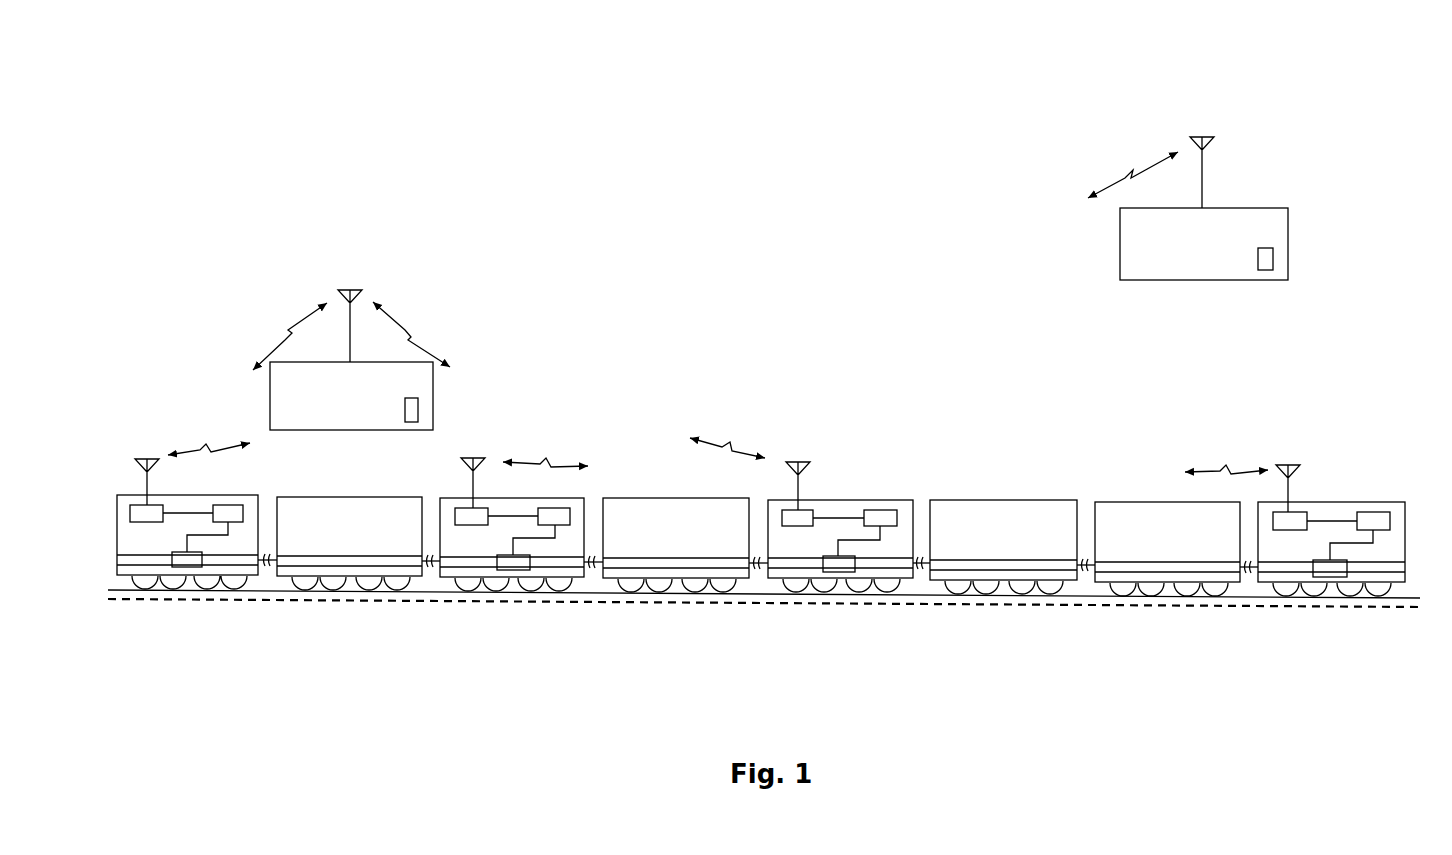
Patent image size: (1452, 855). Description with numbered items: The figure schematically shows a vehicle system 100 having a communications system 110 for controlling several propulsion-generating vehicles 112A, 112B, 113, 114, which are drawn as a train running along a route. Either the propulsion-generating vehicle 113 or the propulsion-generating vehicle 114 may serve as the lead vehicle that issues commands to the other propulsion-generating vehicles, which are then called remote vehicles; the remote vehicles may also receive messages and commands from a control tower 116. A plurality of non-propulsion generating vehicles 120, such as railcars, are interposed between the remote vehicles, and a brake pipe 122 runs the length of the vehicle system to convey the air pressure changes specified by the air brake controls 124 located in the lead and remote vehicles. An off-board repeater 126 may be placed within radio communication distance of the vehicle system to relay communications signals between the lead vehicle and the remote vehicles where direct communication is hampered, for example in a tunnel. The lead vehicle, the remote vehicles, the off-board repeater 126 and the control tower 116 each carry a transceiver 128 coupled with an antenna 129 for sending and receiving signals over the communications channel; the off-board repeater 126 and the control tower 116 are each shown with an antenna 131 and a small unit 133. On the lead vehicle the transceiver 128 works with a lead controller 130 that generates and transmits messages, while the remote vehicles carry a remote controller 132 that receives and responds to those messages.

The vehicle system 100 is at (553, 365).
The communications system 110 is at (752, 420).
The propulsion-generating vehicle 112A is at (858, 500).
The propulsion-generating vehicle 112B is at (458, 498).
The propulsion-generating vehicle 113 is at (1406, 512).
The propulsion-generating vehicle 114 is at (197, 525).
The control tower 116 is at (1205, 282).
The non-propulsion generating vehicle 120 is at (345, 497).
The brake pipe 122 is at (753, 588).
The air brake control 124 is at (187, 567).
The off-board repeater 126 is at (435, 385).
The transceiver 128 is at (158, 522).
The antenna 129 is at (128, 462).
The lead controller 130 is at (232, 500).
The off-board antenna 131 is at (340, 290).
The remote controller 132 is at (563, 505).
The communication unit 133 is at (420, 410).